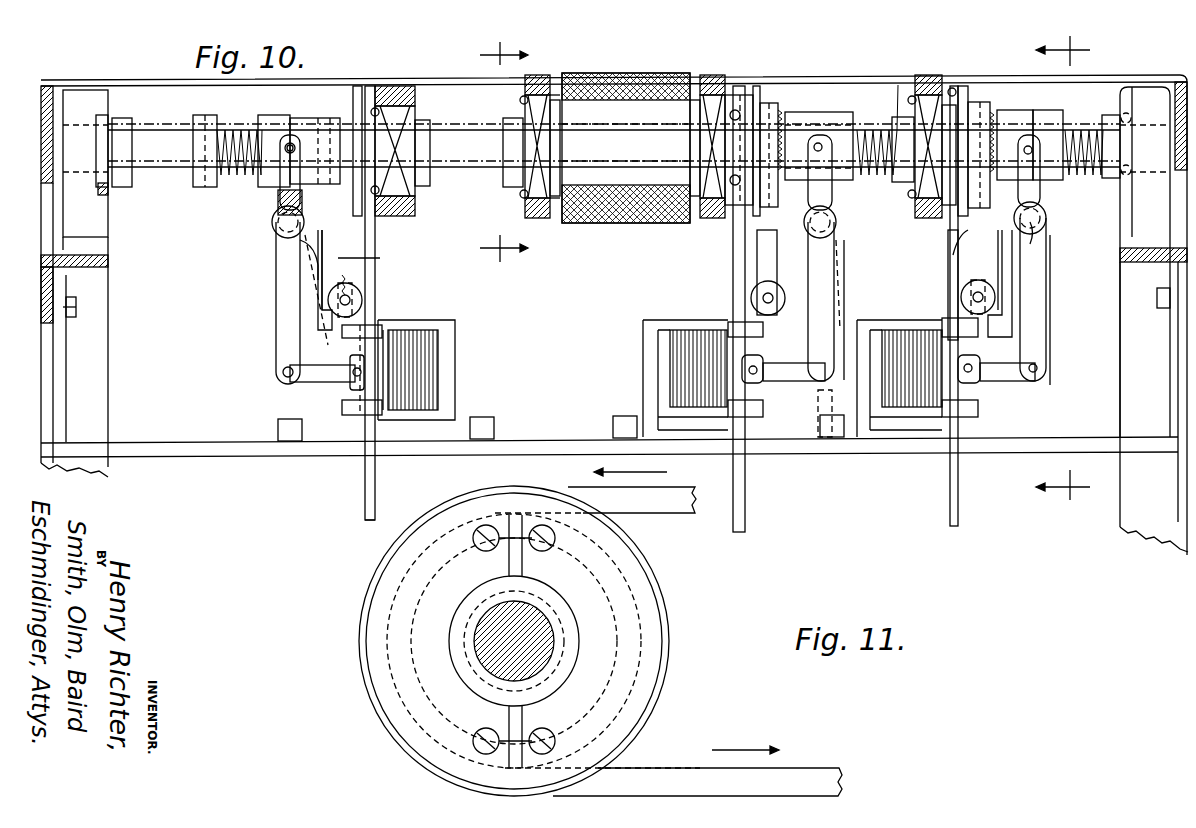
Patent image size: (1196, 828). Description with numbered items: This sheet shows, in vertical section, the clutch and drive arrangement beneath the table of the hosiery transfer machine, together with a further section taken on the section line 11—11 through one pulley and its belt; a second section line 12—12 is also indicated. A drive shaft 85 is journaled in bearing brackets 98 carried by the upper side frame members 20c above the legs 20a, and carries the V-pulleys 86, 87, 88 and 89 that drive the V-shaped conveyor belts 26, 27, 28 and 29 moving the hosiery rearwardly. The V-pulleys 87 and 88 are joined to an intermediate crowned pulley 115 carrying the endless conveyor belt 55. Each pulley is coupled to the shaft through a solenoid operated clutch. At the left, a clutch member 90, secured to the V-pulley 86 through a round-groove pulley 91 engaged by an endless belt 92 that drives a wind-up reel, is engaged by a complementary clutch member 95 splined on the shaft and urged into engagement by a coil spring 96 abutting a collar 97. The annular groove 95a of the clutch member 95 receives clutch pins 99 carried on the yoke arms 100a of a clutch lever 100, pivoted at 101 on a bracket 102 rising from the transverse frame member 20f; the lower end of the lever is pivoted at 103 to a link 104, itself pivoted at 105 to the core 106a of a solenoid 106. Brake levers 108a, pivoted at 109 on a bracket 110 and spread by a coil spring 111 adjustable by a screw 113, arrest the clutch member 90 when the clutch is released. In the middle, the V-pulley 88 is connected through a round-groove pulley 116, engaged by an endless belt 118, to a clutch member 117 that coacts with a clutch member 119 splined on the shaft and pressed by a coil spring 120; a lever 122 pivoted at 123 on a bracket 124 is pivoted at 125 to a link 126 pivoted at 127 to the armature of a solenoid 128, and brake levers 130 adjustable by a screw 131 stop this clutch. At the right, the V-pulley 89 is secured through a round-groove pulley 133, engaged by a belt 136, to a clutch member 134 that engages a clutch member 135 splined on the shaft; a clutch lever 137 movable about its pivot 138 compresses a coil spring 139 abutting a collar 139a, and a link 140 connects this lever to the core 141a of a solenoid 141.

In FIG. 10, the section line 11— 11 is at (487, 152).
In FIG. 10, the section line 12— 12 is at (1079, 280).
In FIG. 10, the legs 20a is at (1165, 530).
In FIG. 10, the upper longitudinal side frame members 20c is at (90, 262).
In FIG. 10, the transverse frame member 20f is at (575, 439).
In FIG. 10, the V-shaped conveyor belt 26 is at (395, 86).
In FIG. 10, the V-shaped conveyor belt 27 is at (540, 75).
In FIG. 11, the V-shaped conveyor belt 27 is at (687, 775).
In FIG. 10, the V-shaped conveyor belt 28 is at (714, 75).
In FIG. 10, the V-shaped conveyor belt 29 is at (928, 75).
In FIG. 10, the endless conveyor belt 55 is at (640, 73).
In FIG. 10, the drive shaft 85 is at (172, 160).
In FIG. 11, the drive shaft 85 is at (480, 632).
In FIG. 10, the V-pulley 86 is at (430, 180).
In FIG. 10, the V-pulley 87 is at (528, 210).
In FIG. 11, the V-pulley 87 is at (655, 625).
In FIG. 10, the V-pulley 88 is at (735, 205).
In FIG. 10, the V-pulley 89 is at (950, 205).
In FIG. 10, the clutch member 90 is at (318, 118).
In FIG. 10, the intermediate round-groove pulley 91 is at (357, 110).
In FIG. 10, the endless belt 92 is at (368, 100).
In FIG. 10, the complementary clutch member 95 is at (282, 155).
In FIG. 10, the annular groove 95a is at (278, 108).
In FIG. 10, the coil spring 96 is at (238, 130).
In FIG. 10, the collar 97 is at (205, 115).
In FIG. 10, the bearing brackets 98 is at (108, 200).
In FIG. 10, the clutch pins 99 is at (285, 150).
In FIG. 10, the clutch lever 100 is at (276, 325).
In FIG. 10, the yoke arms 100a is at (278, 200).
In FIG. 10, the pivot 101 is at (272, 225).
In FIG. 10, the bracket 102 is at (305, 300).
In FIG. 10, the pivot 103 is at (283, 372).
In FIG. 10, the link 104 is at (330, 382).
In FIG. 10, the pivot 105 is at (355, 378).
In FIG. 10, the solenoid 106 is at (425, 345).
In FIG. 10, the core 106a is at (378, 350).
In FIG. 10, the brake levers 108a is at (960, 252).
In FIG. 10, the pivot 109 is at (300, 255).
In FIG. 10, the bracket 110 is at (332, 243).
In FIG. 10, the coil spring 111 is at (348, 282).
In FIG. 10, the screw 113 is at (362, 300).
In FIG. 10, the intermediate crowned pulley 115 is at (556, 205).
In FIG. 10, the intermediate round-groove pulley 116 is at (757, 100).
In FIG. 10, the clutch member 117 is at (778, 120).
In FIG. 10, the endless belt 118 is at (745, 510).
In FIG. 10, the clutch member 119 is at (838, 112).
In FIG. 10, the coil spring 120 is at (872, 175).
In FIG. 10, the clutch operating lever 122 is at (834, 270).
In FIG. 10, the pivot 123 is at (812, 233).
In FIG. 10, the bracket 124 is at (844, 300).
In FIG. 10, the pivot 125 is at (830, 395).
In FIG. 10, the link 126 is at (760, 365).
In FIG. 10, the pivot 127 is at (760, 375).
In FIG. 10, the solenoid 128 is at (700, 368).
In FIG. 10, the brake levers 130 is at (757, 265).
In FIG. 10, the screw 131 is at (751, 298).
In FIG. 10, the intermediate round-groove pulley 133 is at (963, 95).
In FIG. 10, the clutch member 134 is at (1020, 98).
In FIG. 10, the clutch member 135 is at (1063, 120).
In FIG. 10, the belt 136 is at (950, 510).
In FIG. 10, the clutch lever 137 is at (1046, 270).
In FIG. 10, the pivot 138 is at (1033, 244).
In FIG. 10, the coil spring 139 is at (1085, 175).
In FIG. 10, the collar 139a is at (1108, 120).
In FIG. 10, the link 140 is at (1005, 381).
In FIG. 10, the solenoid 141 is at (905, 400).
In FIG. 10, the core 141a is at (965, 372).